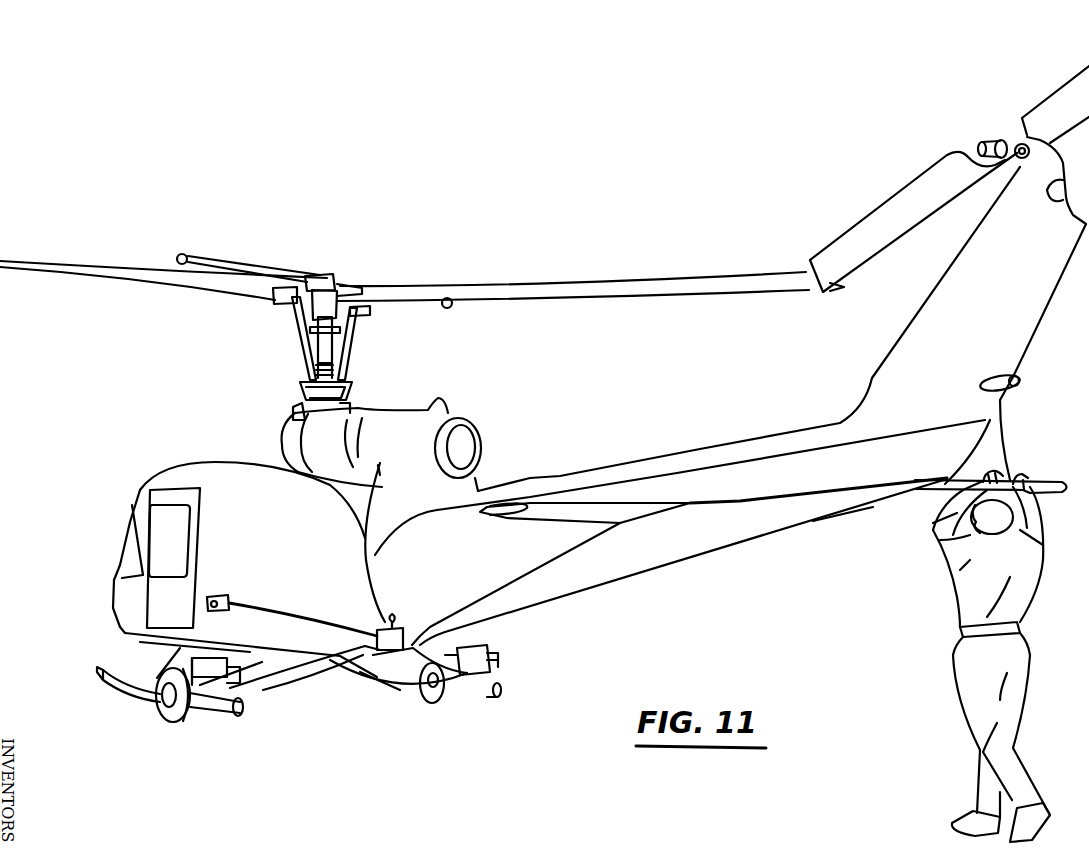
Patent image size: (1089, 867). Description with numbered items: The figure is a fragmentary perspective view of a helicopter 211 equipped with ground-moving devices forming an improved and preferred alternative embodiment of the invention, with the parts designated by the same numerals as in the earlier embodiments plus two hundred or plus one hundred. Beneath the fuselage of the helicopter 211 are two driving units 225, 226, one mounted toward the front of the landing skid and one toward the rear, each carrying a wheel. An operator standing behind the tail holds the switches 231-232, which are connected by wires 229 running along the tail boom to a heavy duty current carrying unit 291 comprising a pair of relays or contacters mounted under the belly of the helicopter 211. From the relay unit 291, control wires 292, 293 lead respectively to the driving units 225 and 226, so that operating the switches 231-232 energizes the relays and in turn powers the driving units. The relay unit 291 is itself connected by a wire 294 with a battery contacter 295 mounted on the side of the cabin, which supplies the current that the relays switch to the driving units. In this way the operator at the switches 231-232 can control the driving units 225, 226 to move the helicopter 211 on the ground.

The helicopter 211 is at (757, 435).
The driving unit 225 is at (207, 686).
The driving unit 226 is at (488, 648).
The wires 229 is at (780, 504).
The switches 231-232 is at (990, 437).
The heavy duty current carrying unit 291 is at (400, 622).
The control wire 292 is at (287, 697).
The control wire 293 is at (433, 690).
The wire 294 is at (347, 627).
The battery contacter 295 is at (221, 596).